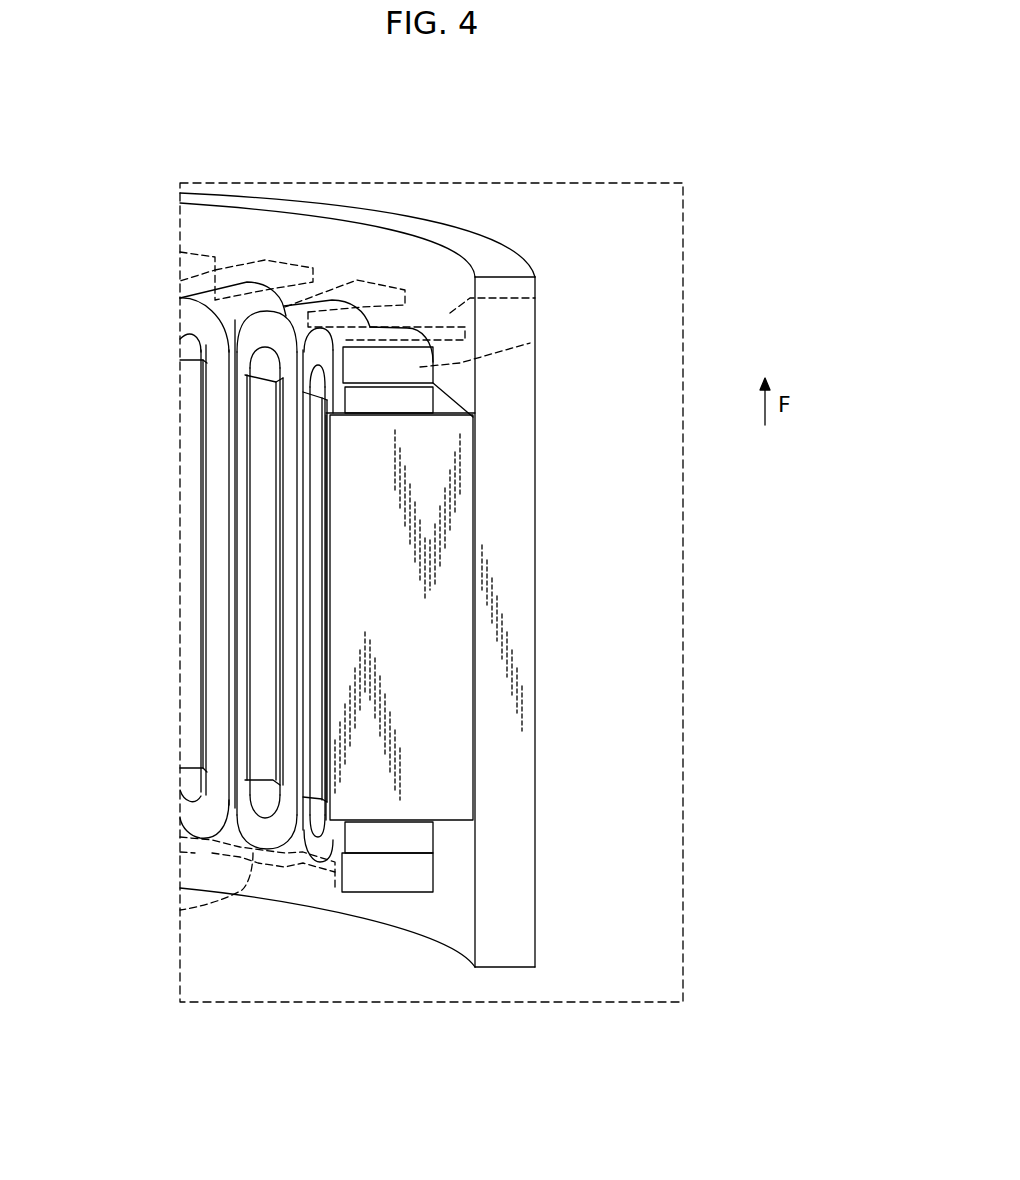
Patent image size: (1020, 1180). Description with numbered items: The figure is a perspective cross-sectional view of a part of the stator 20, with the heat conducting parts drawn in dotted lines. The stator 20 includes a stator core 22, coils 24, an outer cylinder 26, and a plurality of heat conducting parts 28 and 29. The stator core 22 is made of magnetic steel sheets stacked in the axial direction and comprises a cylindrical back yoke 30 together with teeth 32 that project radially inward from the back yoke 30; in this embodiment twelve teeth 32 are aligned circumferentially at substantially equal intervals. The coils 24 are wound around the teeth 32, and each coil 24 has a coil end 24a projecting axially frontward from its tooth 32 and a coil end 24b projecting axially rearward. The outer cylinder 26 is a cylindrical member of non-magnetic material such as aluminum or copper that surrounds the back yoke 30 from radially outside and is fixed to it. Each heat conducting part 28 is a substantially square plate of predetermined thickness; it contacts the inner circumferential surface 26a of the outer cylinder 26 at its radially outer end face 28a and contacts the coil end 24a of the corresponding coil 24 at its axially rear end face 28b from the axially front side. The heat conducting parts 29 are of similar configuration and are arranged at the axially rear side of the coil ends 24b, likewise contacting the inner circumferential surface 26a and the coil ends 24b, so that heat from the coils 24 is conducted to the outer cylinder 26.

The stator 20 is at (737, 76).
The stator core 22 is at (490, 725).
The coil 24 is at (288, 641).
The coil end 24a is at (315, 355).
The coil end 24b is at (320, 840).
The outer cylinder 26 is at (505, 582).
The inner circumferential surface 26a is at (457, 853).
The heat conducting part 28 is at (190, 255).
The radially outer end face 28a is at (535, 298).
The axially rear end face 28b is at (530, 343).
The heat conducting part 29 is at (335, 888).
The back yoke 30 is at (443, 403).
The tooth 32 is at (362, 518).